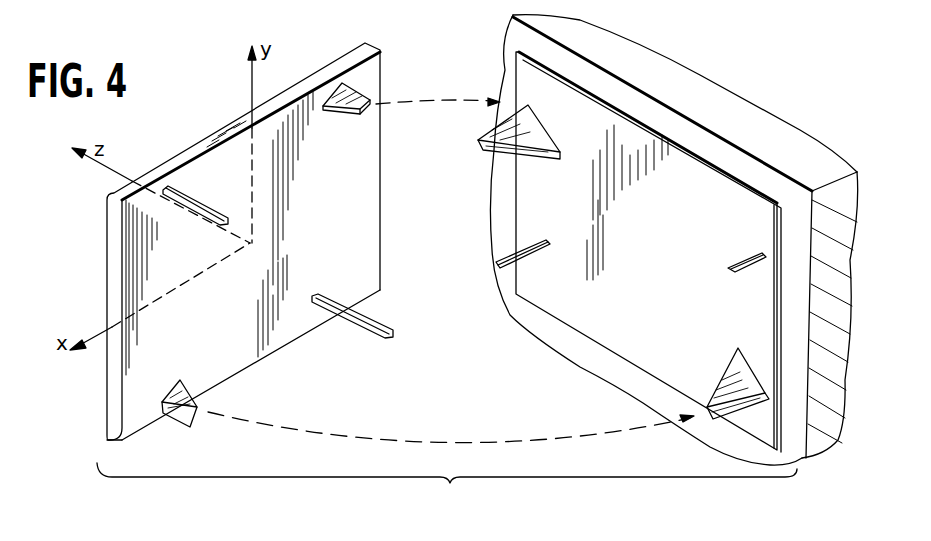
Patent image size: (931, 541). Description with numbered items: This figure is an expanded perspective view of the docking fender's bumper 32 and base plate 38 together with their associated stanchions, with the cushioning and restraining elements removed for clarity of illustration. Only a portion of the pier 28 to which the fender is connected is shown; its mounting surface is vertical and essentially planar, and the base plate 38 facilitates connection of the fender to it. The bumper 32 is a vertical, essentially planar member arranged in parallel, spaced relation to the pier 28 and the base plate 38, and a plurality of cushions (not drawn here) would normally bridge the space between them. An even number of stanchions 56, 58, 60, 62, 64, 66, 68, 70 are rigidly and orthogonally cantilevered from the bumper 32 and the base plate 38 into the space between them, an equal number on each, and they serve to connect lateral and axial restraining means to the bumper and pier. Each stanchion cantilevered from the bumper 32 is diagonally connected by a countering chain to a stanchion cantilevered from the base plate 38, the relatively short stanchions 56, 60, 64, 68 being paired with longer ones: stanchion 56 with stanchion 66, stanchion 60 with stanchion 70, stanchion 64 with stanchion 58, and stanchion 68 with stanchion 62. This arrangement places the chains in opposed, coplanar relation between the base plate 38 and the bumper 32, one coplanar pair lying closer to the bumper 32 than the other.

The pier 28 is at (680, 98).
The bumper 32 is at (331, 62).
The base plate 38 is at (650, 229).
The stanchion 56 is at (349, 106).
The stanchion 58 is at (547, 143).
The stanchion 60 is at (530, 242).
The stanchion 62 is at (367, 318).
The stanchion 64 is at (192, 392).
The stanchion 66 is at (730, 368).
The stanchion 68 is at (745, 275).
The stanchion 70 is at (212, 190).